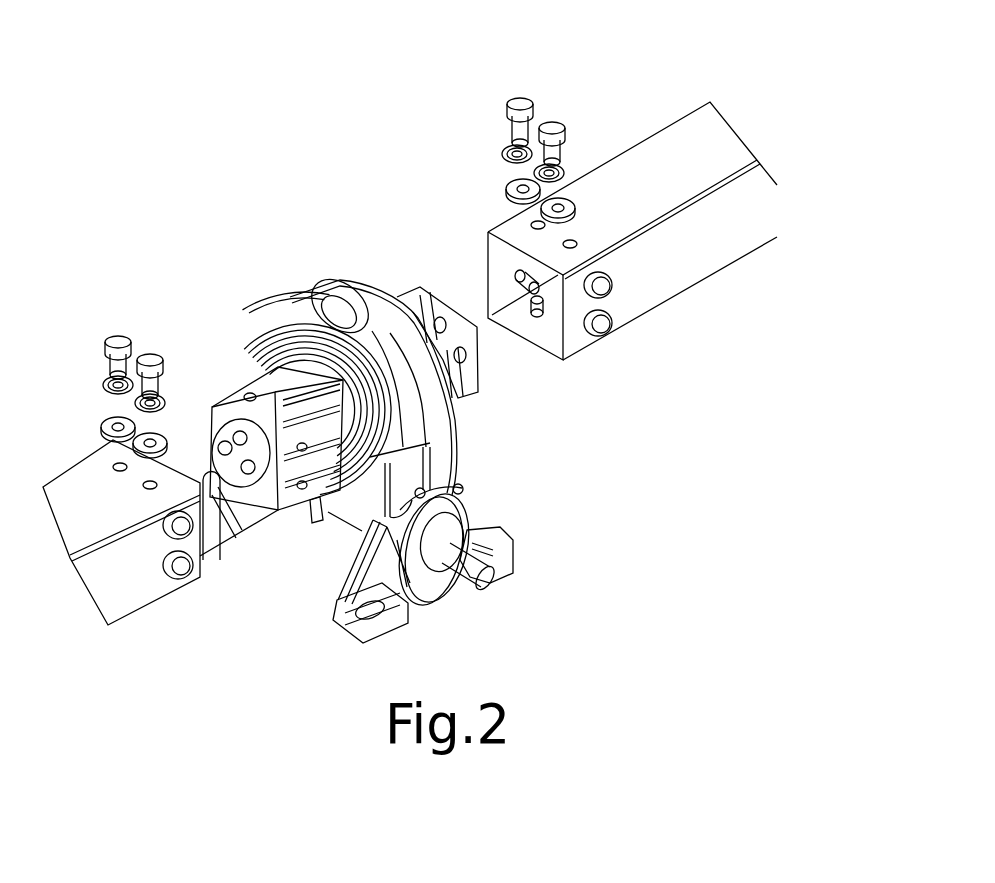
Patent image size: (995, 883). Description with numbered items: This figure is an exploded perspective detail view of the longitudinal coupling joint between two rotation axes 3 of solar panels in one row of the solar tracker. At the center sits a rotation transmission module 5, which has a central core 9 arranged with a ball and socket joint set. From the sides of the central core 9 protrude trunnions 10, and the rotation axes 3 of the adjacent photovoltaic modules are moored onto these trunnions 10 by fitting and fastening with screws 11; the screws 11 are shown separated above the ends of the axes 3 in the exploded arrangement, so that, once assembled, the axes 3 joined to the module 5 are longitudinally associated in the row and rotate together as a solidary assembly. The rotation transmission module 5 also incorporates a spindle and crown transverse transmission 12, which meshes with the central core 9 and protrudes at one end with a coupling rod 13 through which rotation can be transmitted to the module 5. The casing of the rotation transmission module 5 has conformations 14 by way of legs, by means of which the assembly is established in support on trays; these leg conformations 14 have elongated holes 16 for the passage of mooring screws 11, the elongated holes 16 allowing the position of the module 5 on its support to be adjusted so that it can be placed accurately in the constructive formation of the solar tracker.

The rotation axis 3 is at (687, 257).
The rotation transmission module 5 is at (357, 306).
The central core 9 is at (290, 363).
The trunnion 10 is at (238, 417).
The screw 11 is at (552, 122).
The spindle and crown transverse transmission 12 is at (445, 523).
The coupling rod 13 is at (490, 582).
The conformation by way of legs 14 is at (355, 587).
The elongated hole 16 is at (480, 547).